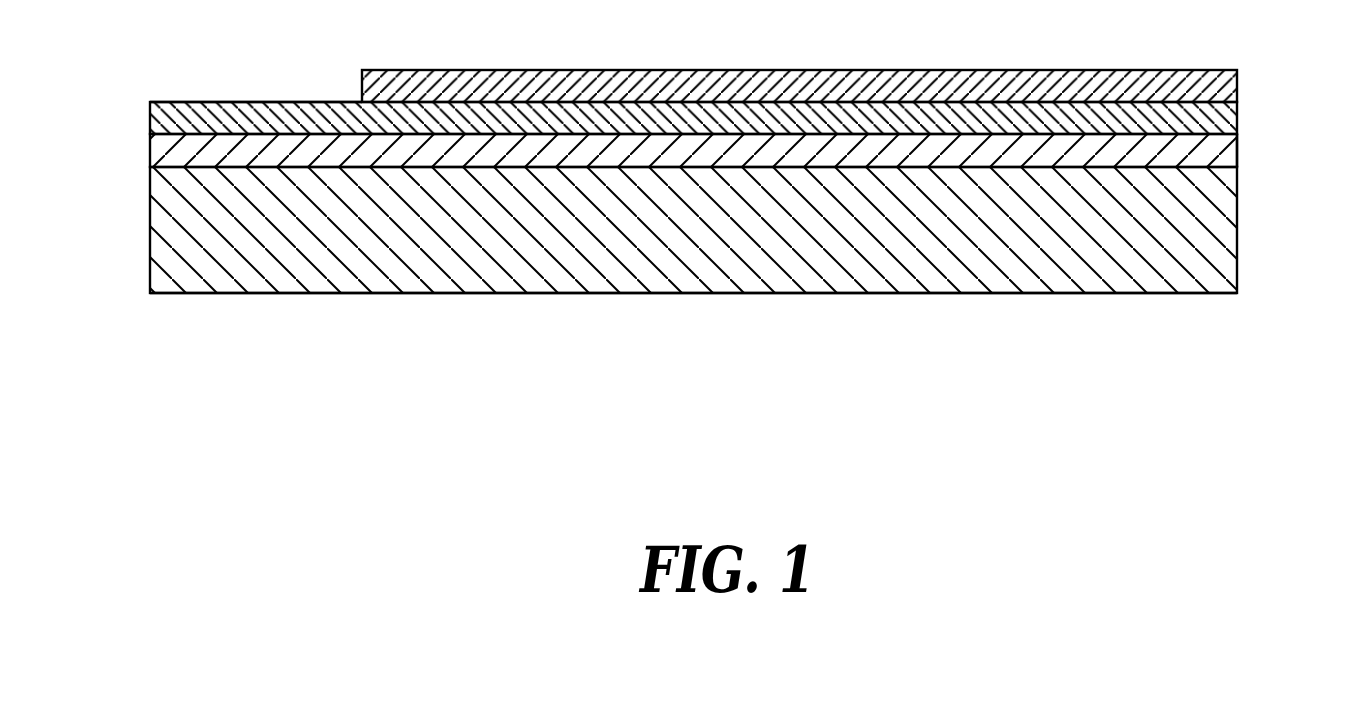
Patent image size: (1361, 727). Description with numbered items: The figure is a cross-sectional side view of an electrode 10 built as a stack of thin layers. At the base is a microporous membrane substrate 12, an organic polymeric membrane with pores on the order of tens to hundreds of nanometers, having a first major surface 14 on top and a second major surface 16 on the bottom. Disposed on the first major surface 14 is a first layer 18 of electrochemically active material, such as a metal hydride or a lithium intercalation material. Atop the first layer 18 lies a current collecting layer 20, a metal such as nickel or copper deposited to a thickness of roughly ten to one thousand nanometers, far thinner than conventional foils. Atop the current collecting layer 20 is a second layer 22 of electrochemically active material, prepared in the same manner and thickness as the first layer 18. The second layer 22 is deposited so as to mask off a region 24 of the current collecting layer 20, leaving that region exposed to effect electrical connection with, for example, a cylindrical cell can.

The electrode 10 is at (708, 223).
The microporous membrane substrate 12 is at (1220, 255).
The first major surface 14 is at (193, 165).
The second major surface 16 is at (272, 293).
The first layer of electrochemically active material 18 is at (1242, 155).
The current collecting layer 20 is at (165, 121).
The second layer of electrochemically active material 22 is at (1237, 82).
The masked region of current collecting layer 24 is at (246, 102).